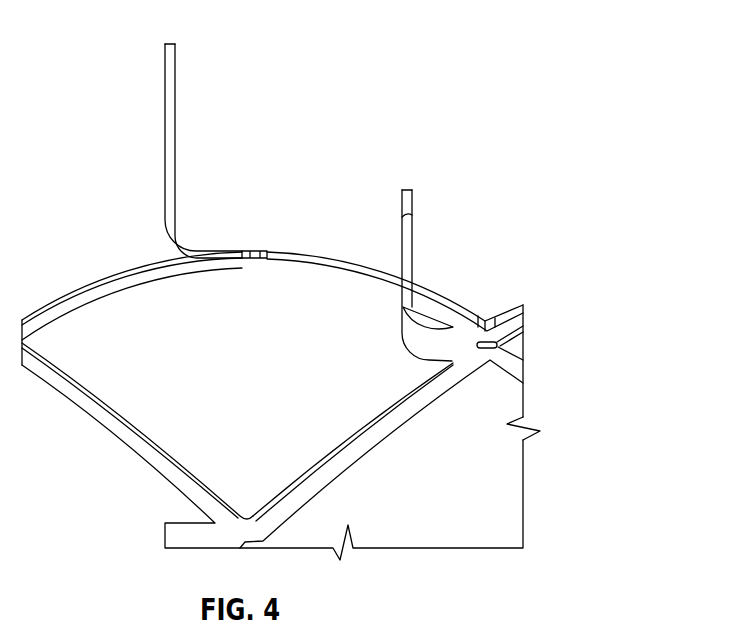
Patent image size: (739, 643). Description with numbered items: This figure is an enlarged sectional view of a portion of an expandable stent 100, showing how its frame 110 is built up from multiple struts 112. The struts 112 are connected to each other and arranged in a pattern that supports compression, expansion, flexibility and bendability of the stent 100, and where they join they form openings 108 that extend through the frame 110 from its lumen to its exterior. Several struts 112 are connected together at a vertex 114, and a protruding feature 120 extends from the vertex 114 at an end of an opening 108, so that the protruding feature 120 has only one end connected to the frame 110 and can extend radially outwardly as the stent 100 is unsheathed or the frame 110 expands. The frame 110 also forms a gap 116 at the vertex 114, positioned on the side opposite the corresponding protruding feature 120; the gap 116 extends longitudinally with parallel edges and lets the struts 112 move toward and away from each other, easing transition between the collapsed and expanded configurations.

The expandable stent 100 is at (304, 115).
The opening 108 is at (146, 292).
The frame 110 is at (272, 251).
The strut 112 is at (384, 280).
The vertex 114 is at (462, 342).
The gap 116 is at (523, 338).
The protruding feature 120 is at (165, 160).